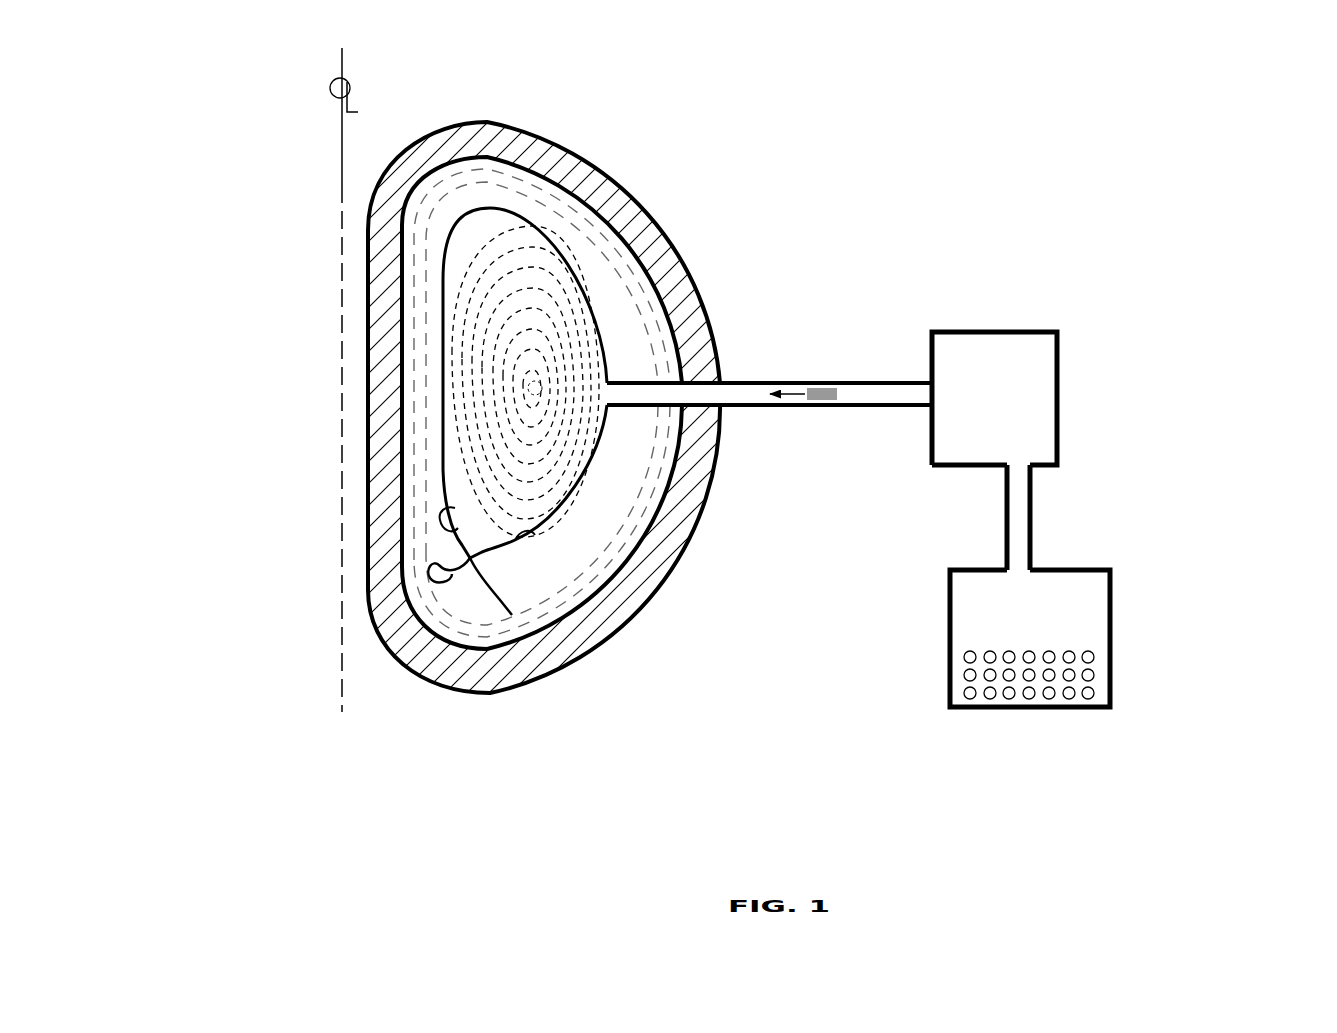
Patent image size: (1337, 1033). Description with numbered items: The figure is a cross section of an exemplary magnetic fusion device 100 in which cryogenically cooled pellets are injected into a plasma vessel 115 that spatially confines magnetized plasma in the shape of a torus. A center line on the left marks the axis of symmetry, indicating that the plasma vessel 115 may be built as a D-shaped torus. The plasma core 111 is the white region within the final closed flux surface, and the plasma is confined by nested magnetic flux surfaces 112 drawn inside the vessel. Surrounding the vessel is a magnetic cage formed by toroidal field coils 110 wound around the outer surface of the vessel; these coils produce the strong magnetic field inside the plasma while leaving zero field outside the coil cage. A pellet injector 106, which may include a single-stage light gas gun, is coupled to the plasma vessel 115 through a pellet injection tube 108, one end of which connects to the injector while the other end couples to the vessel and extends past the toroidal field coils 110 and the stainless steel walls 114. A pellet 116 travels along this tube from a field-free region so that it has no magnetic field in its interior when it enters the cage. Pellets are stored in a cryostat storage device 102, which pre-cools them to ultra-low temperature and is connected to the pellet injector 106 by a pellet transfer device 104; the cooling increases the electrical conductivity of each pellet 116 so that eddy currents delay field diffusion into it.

The magnetic fusion device 100 is at (1238, 48).
The cryostat storage device 102 is at (1118, 625).
The pellet transfer device 104 is at (1040, 507).
The pellet injector 106 is at (1064, 358).
The pellet injection tube 108 is at (851, 378).
The toroidal field coil 110 is at (622, 203).
The plasma core 111 is at (530, 383).
The magnetic flux surfaces 112 is at (498, 488).
The stainless steel walls 114 is at (597, 584).
The plasma vessel 115 is at (650, 549).
The pellet 116 is at (809, 418).